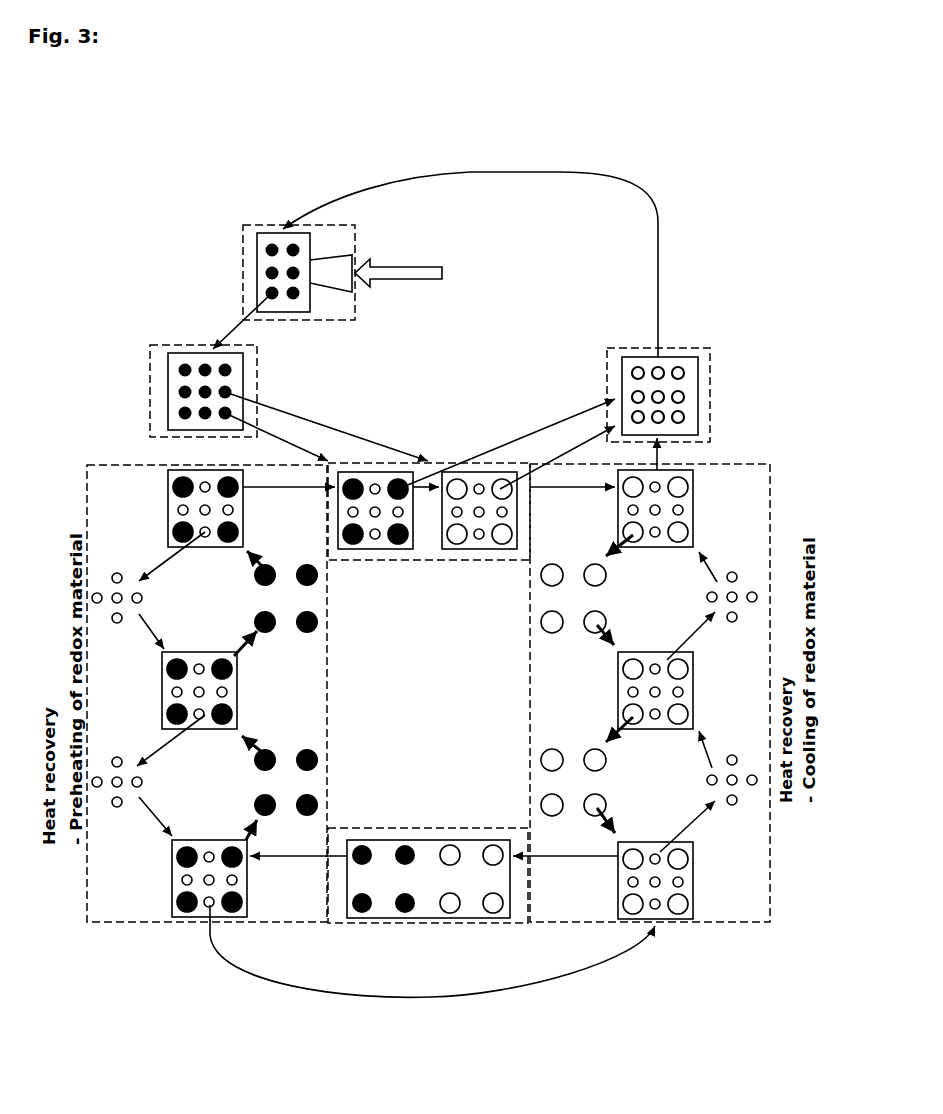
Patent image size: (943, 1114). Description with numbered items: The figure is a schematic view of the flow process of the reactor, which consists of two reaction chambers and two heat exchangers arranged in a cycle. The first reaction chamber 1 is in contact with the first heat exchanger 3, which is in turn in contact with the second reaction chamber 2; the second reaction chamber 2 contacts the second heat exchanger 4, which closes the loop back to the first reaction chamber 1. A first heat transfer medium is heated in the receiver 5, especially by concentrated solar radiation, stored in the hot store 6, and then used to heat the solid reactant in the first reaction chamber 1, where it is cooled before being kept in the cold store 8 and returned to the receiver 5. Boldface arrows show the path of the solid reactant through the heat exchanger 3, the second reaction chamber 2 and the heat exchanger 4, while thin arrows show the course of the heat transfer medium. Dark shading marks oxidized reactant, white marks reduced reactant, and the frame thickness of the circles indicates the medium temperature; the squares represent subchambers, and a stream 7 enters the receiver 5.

The first reaction chamber 1 is at (456, 561).
The second reaction chamber 2 is at (400, 823).
The first heat exchanger 3 is at (707, 922).
The second heat exchanger 4 is at (143, 922).
The receiver 5 is at (252, 263).
The first store (hot store) 6 is at (160, 398).
The feed gas stream 7 is at (412, 267).
The second store (cold store) 8 is at (702, 403).